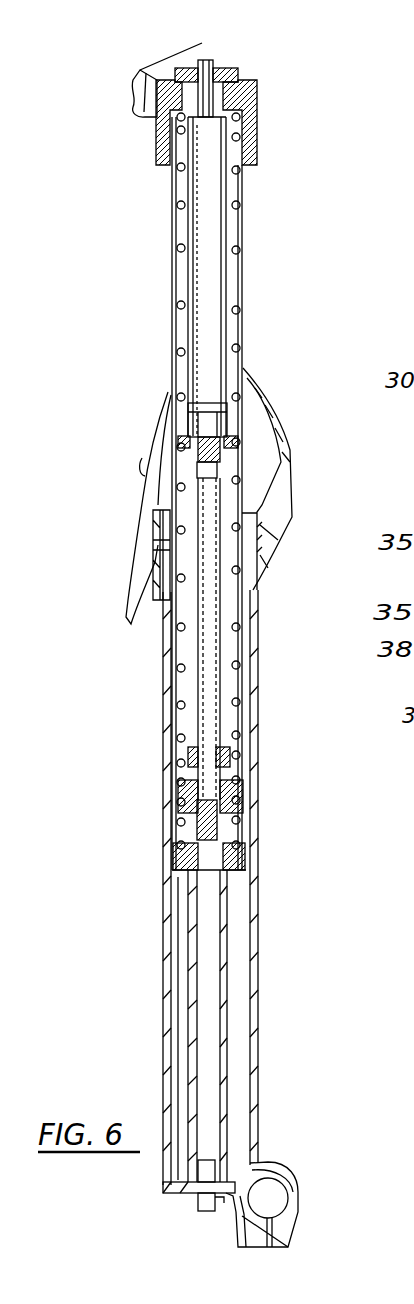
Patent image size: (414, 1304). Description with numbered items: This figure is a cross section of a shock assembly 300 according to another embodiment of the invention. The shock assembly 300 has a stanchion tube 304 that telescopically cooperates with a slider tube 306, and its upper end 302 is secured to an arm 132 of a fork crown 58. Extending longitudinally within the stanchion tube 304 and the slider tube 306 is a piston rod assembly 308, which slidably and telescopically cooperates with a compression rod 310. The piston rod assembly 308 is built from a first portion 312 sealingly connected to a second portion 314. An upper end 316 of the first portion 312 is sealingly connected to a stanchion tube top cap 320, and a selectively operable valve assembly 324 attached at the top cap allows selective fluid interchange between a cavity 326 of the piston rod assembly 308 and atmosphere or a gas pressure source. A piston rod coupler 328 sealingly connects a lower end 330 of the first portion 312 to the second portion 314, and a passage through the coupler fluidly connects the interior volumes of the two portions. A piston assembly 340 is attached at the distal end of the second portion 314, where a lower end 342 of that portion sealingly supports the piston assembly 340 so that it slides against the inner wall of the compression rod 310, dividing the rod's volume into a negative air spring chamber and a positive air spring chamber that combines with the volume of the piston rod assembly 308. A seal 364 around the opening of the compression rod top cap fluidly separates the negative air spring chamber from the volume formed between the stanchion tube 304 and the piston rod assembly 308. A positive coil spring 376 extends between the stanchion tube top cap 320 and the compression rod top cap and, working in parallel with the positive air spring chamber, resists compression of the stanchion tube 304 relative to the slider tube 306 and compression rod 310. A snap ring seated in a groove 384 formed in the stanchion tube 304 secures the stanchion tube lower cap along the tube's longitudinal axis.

The fork crown 58 is at (173, 63).
The selectively operable valve assembly 324 is at (205, 60).
The stanchion tube top cap 320 is at (236, 70).
The arm 132 is at (253, 105).
The upper end 302 is at (302, 135).
The upper end 316 is at (178, 146).
The stanchion tube 304 is at (239, 310).
The cavity 326 is at (200, 181).
The first portion 312 is at (185, 332).
The piston rod assembly 308 is at (183, 265).
The positive coil spring 376 is at (234, 338).
The shock assembly 300 is at (358, 257).
The piston rod coupler 328 is at (217, 423).
The lower end 330 is at (186, 422).
The second portion 314 is at (199, 647).
The lower end 342 is at (184, 787).
The piston assembly 340 is at (188, 836).
The slider tube 306 is at (257, 870).
The compression rod 310 is at (200, 961).
The seal 364 is at (388, 340).
The groove 384 is at (388, 682).